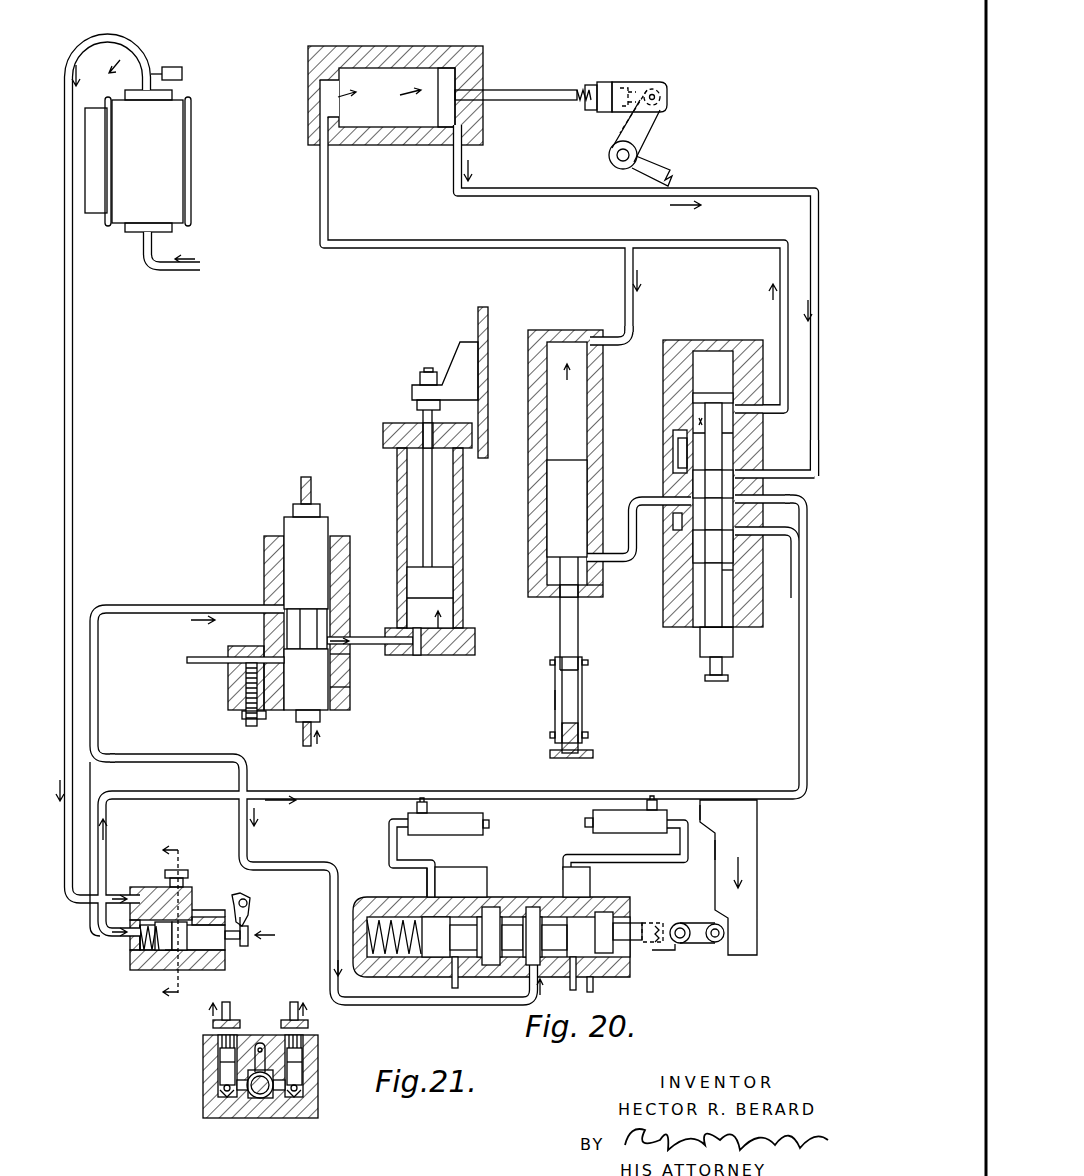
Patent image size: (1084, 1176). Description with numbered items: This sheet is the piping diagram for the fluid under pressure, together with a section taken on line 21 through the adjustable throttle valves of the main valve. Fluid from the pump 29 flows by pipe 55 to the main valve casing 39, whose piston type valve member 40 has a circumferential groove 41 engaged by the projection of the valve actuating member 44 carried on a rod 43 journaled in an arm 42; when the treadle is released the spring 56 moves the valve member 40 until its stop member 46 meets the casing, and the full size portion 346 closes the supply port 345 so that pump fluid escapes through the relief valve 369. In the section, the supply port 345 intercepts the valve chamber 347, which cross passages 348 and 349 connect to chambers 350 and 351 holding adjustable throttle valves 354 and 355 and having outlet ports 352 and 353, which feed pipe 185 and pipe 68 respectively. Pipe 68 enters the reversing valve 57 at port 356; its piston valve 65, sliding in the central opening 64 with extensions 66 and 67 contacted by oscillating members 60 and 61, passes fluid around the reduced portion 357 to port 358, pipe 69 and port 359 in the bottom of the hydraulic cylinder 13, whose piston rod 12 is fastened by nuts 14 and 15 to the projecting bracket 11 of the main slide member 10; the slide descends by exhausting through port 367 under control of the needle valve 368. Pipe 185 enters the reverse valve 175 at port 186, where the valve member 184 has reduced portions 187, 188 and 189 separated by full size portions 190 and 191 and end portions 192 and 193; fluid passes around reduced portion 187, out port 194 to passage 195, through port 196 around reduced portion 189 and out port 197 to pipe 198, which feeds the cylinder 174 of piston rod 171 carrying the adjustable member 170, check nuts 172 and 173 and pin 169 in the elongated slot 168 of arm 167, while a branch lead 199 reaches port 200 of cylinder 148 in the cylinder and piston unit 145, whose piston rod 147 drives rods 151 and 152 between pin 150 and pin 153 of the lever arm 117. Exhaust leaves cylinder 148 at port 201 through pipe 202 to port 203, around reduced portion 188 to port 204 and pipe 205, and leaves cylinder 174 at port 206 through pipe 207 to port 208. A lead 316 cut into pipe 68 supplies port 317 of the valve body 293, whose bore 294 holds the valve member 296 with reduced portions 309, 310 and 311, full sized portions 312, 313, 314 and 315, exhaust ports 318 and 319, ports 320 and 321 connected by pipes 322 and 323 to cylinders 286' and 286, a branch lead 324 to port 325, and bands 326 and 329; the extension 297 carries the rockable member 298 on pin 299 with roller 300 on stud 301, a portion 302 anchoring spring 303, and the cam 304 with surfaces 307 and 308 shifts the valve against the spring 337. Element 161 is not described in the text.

In FIG. 20, the main slide member 10 is at (483, 372).
In FIG. 20, the projecting bracket 11 is at (460, 362).
In FIG. 20, the piston rod 12 is at (440, 517).
In FIG. 20, the hydraulic cylinder 13 is at (460, 607).
In FIG. 20, the nut 14 is at (418, 378).
In FIG. 20, the nut 15 is at (417, 407).
In FIG. 20, the section line 21— 21 is at (183, 920).
In FIG. 20, the pump 29 is at (176, 148).
In FIG. 20, the valve casing 39 is at (155, 973).
In FIG. 21, the valve casing 39 is at (318, 1073).
In FIG. 20, the piston type valve member 40 is at (247, 944).
In FIG. 20, the circumferential groove 41 is at (233, 945).
In FIG. 20, the arm 42 is at (208, 900).
In FIG. 20, the rod 43 is at (248, 903).
In FIG. 20, the valve actuating member 44 is at (247, 919).
In FIG. 20, the stop member 46 is at (251, 901).
In FIG. 20, the pipe 55 is at (74, 453).
In FIG. 20, the spring 56 is at (133, 970).
In FIG. 20, the reversing valve 57 is at (350, 701).
In FIG. 20, the oscillating member 60 is at (303, 743).
In FIG. 20, the oscillating member 61 is at (300, 487).
In FIG. 20, the central opening 64 is at (284, 555).
In FIG. 20, the piston valve 65 is at (323, 523).
In FIG. 20, the extension 66 is at (320, 718).
In FIG. 20, the extension 67 is at (314, 507).
In FIG. 20, the pipe 68 is at (160, 606).
In FIG. 21, the pipe 68 is at (212, 1011).
In FIG. 20, the pipe 69 is at (360, 636).
In FIG. 20, the lever arm 117 is at (593, 754).
In FIG. 20, the cylinder and piston unit 145 is at (528, 458).
In FIG. 20, the piston rod 147 is at (572, 641).
In FIG. 20, the cylinder 148 is at (532, 523).
In FIG. 20, the pin 150 is at (585, 663).
In FIG. 20, the rod 151 is at (555, 706).
In FIG. 20, the rod 152 is at (583, 706).
In FIG. 20, the pin 153 is at (583, 734).
In FIG. 20, the arm 161 is at (670, 166).
In FIG. 20, the arm 167 is at (644, 130).
In FIG. 20, the elongated slot 168 is at (661, 100).
In FIG. 20, the pin 169 is at (657, 80).
In FIG. 20, the adjustable member 170 is at (635, 80).
In FIG. 20, the piston rod 171 is at (525, 92).
In FIG. 20, the check nut 172 is at (617, 113).
In FIG. 20, the check nut 173 is at (590, 110).
In FIG. 20, the cylinder 174 is at (383, 140).
In FIG. 20, the reverse valve 175 is at (676, 348).
In FIG. 20, the valve member 184 is at (718, 682).
In FIG. 20, the pipe 185 is at (798, 703).
In FIG. 21, the pipe 185 is at (308, 1011).
In FIG. 20, the port 186 is at (760, 533).
In FIG. 20, the reduced portion 187 is at (720, 553).
In FIG. 20, the reduced portion 188 is at (707, 482).
In FIG. 20, the reduced portion 189 is at (700, 411).
In FIG. 20, the full size portion 190 is at (705, 520).
In FIG. 20, the full size portion 191 is at (723, 457).
In FIG. 20, the full size end portion 192 is at (707, 618).
In FIG. 20, the full size end portion 193 is at (703, 397).
In FIG. 20, the port 194 is at (685, 564).
In FIG. 20, the passage 195 is at (676, 454).
In FIG. 20, the port 196 is at (675, 433).
In FIG. 20, the port 197 is at (745, 411).
In FIG. 20, the pipe 198 is at (320, 150).
In FIG. 20, the branch lead 199 is at (625, 279).
In FIG. 20, the port 200 is at (592, 336).
In FIG. 20, the port 201 is at (597, 576).
In FIG. 20, the pipe 202 is at (624, 510).
In FIG. 20, the port 203 is at (682, 512).
In FIG. 20, the port 204 is at (748, 480).
In FIG. 20, the pipe 205 is at (803, 458).
In FIG. 20, the port 206 is at (460, 130).
In FIG. 20, the pipe 207 is at (535, 193).
In FIG. 20, the port 208 is at (745, 500).
In FIG. 20, the left hand cylinder 286 is at (451, 815).
In FIG. 20, the right hand cylinder 286' is at (626, 813).
In FIG. 20, the valve body 293 is at (507, 894).
In FIG. 20, the bore 294 is at (573, 972).
In FIG. 20, the valve member 296 is at (422, 937).
In FIG. 20, the extension 297 is at (633, 923).
In FIG. 20, the rockable member 298 is at (698, 923).
In FIG. 20, the pin 299 is at (685, 941).
In FIG. 20, the roller 300 is at (713, 948).
In FIG. 20, the stud 301 is at (708, 941).
In FIG. 20, the portion 302 is at (657, 958).
In FIG. 20, the spring 303 is at (665, 922).
In FIG. 20, the cam 304 is at (747, 822).
In FIG. 20, the cam surface 307 is at (713, 865).
In FIG. 20, the cam surface 308 is at (700, 817).
In FIG. 20, the reduced portion 309 is at (468, 937).
In FIG. 20, the reduced portion 310 is at (520, 937).
In FIG. 20, the reduced portion 311 is at (569, 937).
In FIG. 20, the full sized portion 312 is at (430, 947).
In FIG. 20, the full sized portion 313 is at (490, 950).
In FIG. 20, the full sized portion 314 is at (558, 989).
In FIG. 20, the full sized portion 315 is at (600, 917).
In FIG. 20, the lead 316 is at (140, 762).
In FIG. 20, the port 317 is at (527, 967).
In FIG. 20, the exhaust port 318 is at (592, 970).
In FIG. 20, the exhaust port 319 is at (455, 972).
In FIG. 20, the port 320 is at (570, 891).
In FIG. 20, the port 321 is at (461, 882).
In FIG. 20, the pipe 322 is at (603, 860).
In FIG. 20, the pipe 323 is at (450, 861).
In FIG. 20, the branch lead 324 is at (428, 879).
In FIG. 20, the port 325 is at (428, 905).
In FIG. 20, the recessed band 326 is at (493, 910).
In FIG. 20, the band 329 is at (532, 910).
In FIG. 20, the spring 337 is at (390, 950).
In FIG. 20, the supply port 345 is at (187, 897).
In FIG. 21, the supply port 345 is at (262, 1046).
In FIG. 20, the full size portion 346 is at (163, 925).
In FIG. 21, the valve chamber 347 is at (260, 1098).
In FIG. 20, the cross passage 348 is at (168, 980).
In FIG. 21, the cross passage 348 is at (273, 1118).
In FIG. 21, the cross passage 349 is at (240, 1113).
In FIG. 21, the chamber 350 is at (300, 1100).
In FIG. 21, the chamber 351 is at (225, 1092).
In FIG. 21, the outlet port 352 is at (300, 1088).
In FIG. 21, the outlet port 353 is at (222, 1088).
In FIG. 21, the adjustable throttle valve 354 is at (300, 1072).
In FIG. 21, the adjustable throttle valve 355 is at (222, 1074).
In FIG. 20, the port 356 is at (301, 625).
In FIG. 20, the reduced portion 357 is at (314, 624).
In FIG. 20, the port 358 is at (352, 659).
In FIG. 20, the port 359 is at (408, 646).
In FIG. 20, the exhaust port 367 is at (239, 663).
In FIG. 20, the needle valve 368 is at (247, 704).
In FIG. 20, the relief valve 369 is at (176, 67).